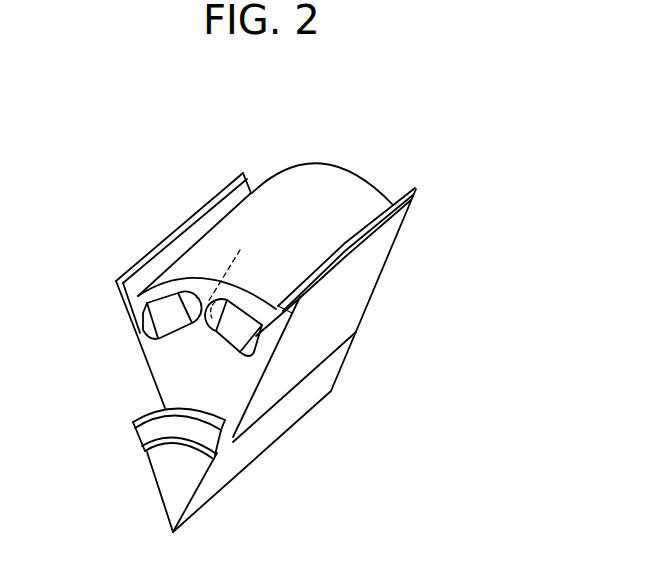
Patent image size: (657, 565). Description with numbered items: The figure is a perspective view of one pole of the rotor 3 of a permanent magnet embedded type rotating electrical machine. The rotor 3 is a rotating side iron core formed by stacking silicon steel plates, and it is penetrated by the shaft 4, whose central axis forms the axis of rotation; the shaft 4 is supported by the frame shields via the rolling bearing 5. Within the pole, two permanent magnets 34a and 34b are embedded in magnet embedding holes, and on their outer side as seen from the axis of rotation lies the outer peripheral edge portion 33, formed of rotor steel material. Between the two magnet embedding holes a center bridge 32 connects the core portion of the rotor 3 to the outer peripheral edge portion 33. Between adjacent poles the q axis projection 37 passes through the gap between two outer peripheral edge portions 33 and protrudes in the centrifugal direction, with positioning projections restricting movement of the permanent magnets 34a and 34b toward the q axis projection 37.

The rotor 3 is at (377, 137).
The shaft 4 is at (264, 432).
The rolling bearing 5 is at (153, 428).
The center bridge 32 is at (223, 272).
The outer peripheral edge portion 33 is at (287, 197).
The permanent magnet 34a is at (168, 312).
The permanent magnet 34b is at (248, 342).
The q axis projection 37 is at (155, 248).